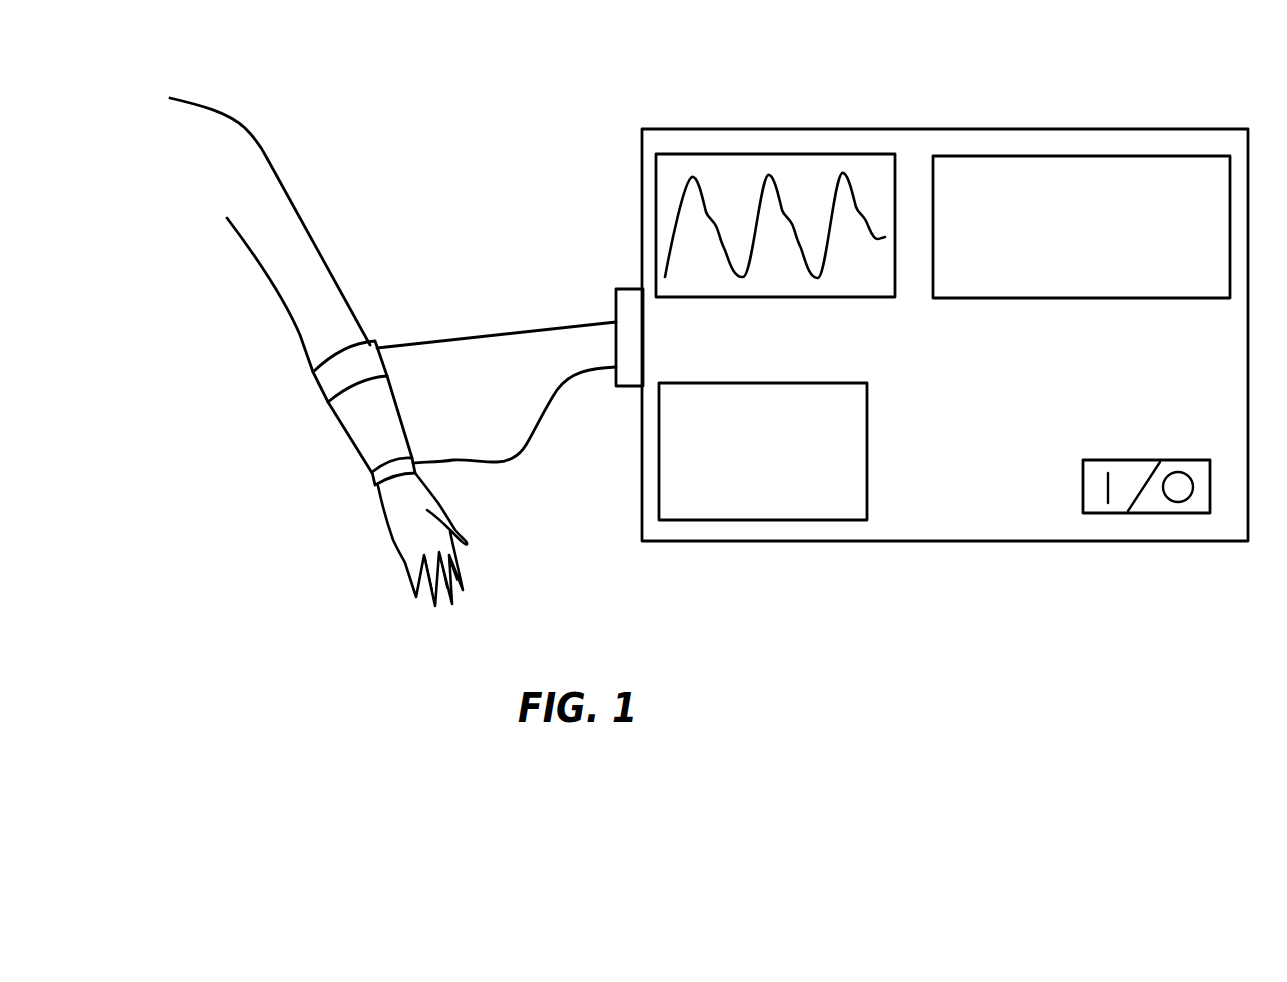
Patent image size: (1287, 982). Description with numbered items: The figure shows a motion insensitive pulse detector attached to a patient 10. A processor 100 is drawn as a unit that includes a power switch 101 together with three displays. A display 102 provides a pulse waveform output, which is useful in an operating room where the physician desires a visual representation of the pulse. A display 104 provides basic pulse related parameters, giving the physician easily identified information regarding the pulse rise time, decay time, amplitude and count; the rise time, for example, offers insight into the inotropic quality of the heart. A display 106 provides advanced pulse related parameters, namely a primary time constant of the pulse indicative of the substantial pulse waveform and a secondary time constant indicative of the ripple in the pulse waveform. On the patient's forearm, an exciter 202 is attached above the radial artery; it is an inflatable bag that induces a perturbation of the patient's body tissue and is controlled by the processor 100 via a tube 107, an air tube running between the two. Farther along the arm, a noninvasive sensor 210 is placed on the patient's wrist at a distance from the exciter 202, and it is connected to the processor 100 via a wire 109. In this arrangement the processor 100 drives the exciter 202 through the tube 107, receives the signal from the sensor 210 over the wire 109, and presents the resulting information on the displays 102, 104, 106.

The patient 10 is at (250, 152).
The processor 100 is at (645, 80).
The power switch 101 is at (1103, 515).
The display 102 is at (800, 153).
The display 104 is at (1060, 155).
The display 106 is at (823, 521).
The tube 107 is at (448, 340).
The wire 109 is at (522, 447).
The exciter 202 is at (317, 390).
The noninvasive sensor 210 is at (380, 487).